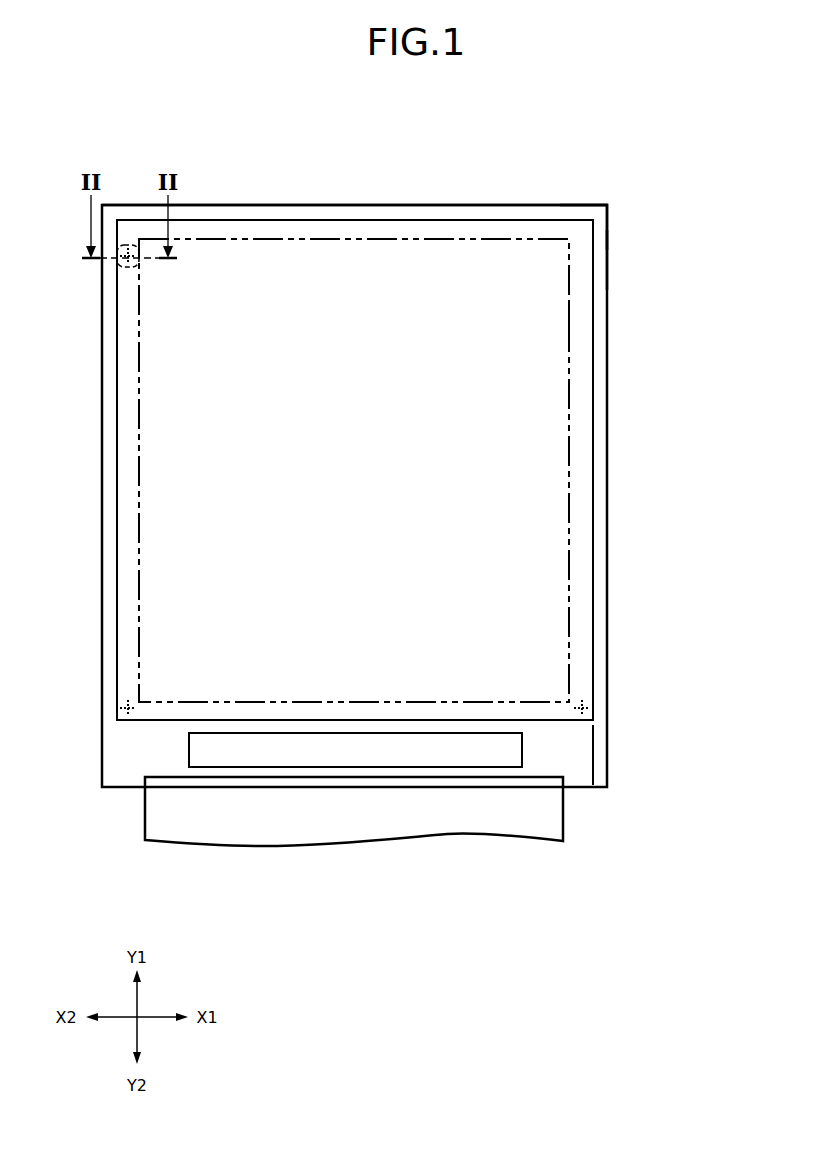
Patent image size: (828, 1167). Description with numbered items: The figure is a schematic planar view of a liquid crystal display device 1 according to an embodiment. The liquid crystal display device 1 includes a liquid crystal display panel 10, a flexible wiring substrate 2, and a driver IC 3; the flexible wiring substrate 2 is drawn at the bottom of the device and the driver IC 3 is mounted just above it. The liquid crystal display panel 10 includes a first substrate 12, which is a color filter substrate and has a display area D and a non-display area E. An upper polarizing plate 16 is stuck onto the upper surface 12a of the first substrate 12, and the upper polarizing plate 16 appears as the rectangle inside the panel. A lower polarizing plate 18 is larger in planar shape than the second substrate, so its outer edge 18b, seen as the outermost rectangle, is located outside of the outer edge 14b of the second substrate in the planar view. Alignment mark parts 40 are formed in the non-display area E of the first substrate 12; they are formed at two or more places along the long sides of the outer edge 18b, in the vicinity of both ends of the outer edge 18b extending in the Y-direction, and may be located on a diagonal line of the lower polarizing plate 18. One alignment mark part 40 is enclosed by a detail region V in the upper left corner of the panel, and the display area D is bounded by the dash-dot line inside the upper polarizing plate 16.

The liquid crystal display device 1 is at (660, 175).
The flexible wiring substrate 2 is at (157, 823).
The driver IC 3 is at (190, 748).
The liquid crystal display panel 10 is at (658, 297).
The first substrate 12 is at (583, 737).
The upper surface 12a is at (580, 757).
The outer edge 14b is at (596, 257).
The upper polarizing plate 16 is at (580, 392).
The lower polarizing plate 18 is at (532, 213).
The outer edge 18b is at (465, 205).
The alignment mark part 40 is at (120, 705).
The display area D is at (550, 471).
The non-display area E is at (580, 333).
The detail region V is at (122, 267).